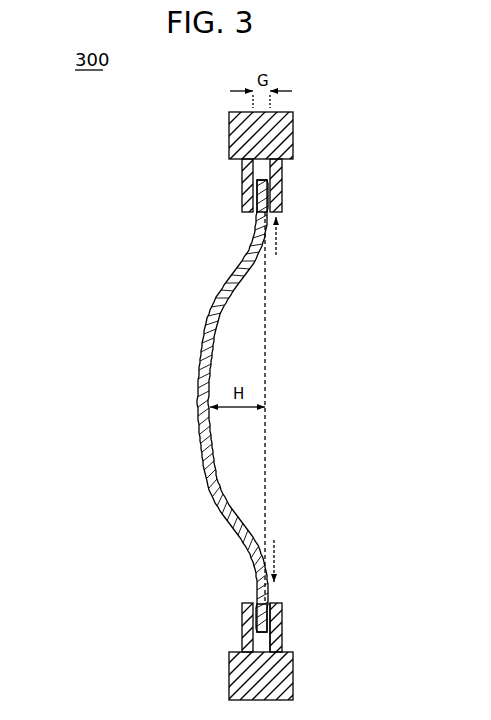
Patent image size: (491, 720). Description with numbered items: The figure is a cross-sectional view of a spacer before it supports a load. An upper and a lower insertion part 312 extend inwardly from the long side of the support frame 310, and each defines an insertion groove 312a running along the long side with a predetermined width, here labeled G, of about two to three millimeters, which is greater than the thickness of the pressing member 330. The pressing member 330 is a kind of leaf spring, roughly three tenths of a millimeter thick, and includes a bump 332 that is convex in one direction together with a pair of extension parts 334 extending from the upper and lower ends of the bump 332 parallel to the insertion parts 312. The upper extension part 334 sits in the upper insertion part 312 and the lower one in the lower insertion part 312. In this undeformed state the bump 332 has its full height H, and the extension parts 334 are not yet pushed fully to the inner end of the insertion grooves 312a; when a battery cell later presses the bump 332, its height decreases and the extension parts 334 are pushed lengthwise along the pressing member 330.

The support frame 310 is at (293, 133).
The insertion part 312 is at (282, 190).
The insertion groove 312a is at (270, 603).
The pressing member 330 is at (121, 255).
The bump 332 is at (203, 353).
The extension part 334 is at (243, 193).